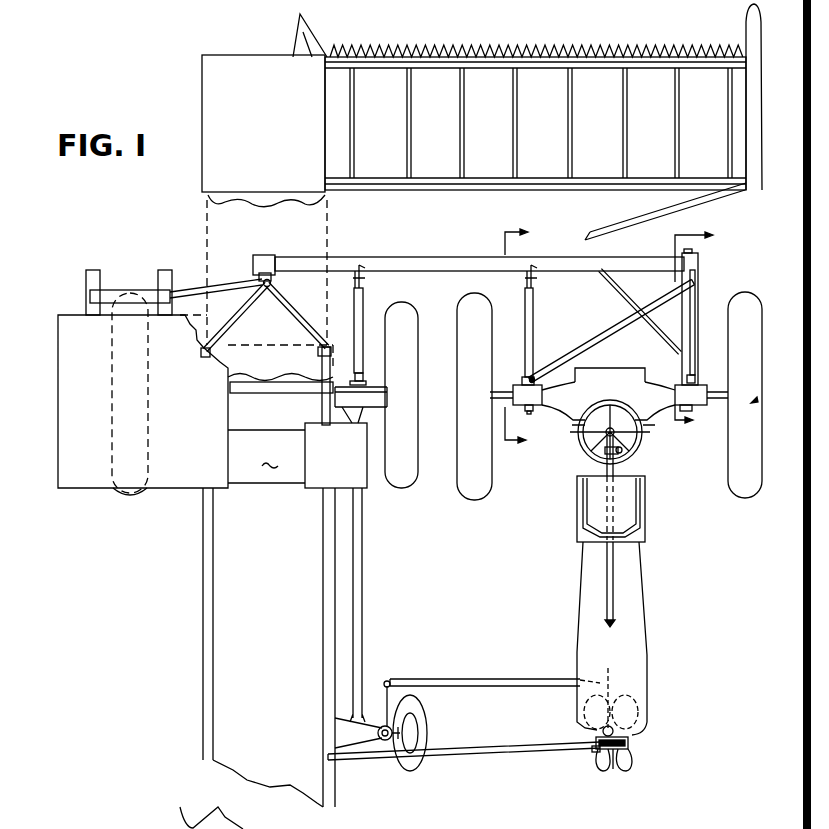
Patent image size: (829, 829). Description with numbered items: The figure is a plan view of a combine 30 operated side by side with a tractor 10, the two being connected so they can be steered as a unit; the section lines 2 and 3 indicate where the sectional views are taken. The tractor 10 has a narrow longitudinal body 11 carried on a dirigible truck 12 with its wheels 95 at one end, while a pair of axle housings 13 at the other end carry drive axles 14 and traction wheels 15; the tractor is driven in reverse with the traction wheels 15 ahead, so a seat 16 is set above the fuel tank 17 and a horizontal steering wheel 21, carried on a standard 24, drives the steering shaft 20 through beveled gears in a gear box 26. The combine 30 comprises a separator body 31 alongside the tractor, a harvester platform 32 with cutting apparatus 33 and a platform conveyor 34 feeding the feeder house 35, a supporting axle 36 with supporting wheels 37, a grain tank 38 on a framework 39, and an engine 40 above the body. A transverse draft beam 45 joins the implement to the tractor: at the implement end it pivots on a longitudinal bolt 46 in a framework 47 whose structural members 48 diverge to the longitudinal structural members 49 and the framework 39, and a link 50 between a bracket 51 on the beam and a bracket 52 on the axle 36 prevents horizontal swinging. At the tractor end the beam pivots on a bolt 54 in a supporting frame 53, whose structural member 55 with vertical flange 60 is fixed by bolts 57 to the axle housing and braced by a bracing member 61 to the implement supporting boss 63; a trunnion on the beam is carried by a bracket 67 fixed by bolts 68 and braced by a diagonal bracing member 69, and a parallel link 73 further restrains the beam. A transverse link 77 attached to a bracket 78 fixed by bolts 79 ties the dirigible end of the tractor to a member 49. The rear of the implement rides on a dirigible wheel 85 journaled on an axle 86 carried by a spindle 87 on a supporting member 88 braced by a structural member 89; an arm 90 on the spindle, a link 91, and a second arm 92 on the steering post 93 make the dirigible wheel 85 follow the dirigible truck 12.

The section line 2- 2 is at (716, 326).
The section line 3- 3 is at (519, 337).
The tractor 10 is at (578, 588).
The body 11 is at (640, 638).
The dirigible truck 12 is at (650, 744).
The axle housings 13 is at (535, 405).
The drive axles 14 is at (500, 390).
The traction wheels 15 is at (470, 308).
The seat 16 is at (628, 505).
The fuel tank 17 is at (628, 580).
The steering shaft 20 is at (607, 554).
The wheel 21 is at (592, 458).
The standard 24 is at (592, 418).
The gear box 26 is at (628, 418).
The combine 30 is at (203, 577).
The separator body 31 is at (276, 556).
The harvester platform 32 is at (546, 129).
The cutting apparatus 33 is at (522, 57).
The platform conveyor 34 is at (650, 80).
The feeder house 35 is at (271, 116).
The supporting axle 36 is at (338, 412).
The supporting wheels 37 is at (130, 498).
The grain tank 38 is at (68, 403).
The framework 39 is at (88, 282).
The engine 40 is at (274, 459).
The draft beam 45 is at (410, 257).
The bolt 46 is at (265, 298).
The framework 47 is at (303, 299).
The structural members 48 is at (240, 286).
The longitudinal structural members 49 is at (205, 356).
The link 50 is at (363, 325).
The bracket 51 is at (366, 278).
The bracket 52 is at (365, 380).
The supporting frame 53 is at (735, 282).
The pivot bolt 54 is at (693, 251).
The structural member 55 is at (690, 328).
The bolts 57 is at (687, 377).
The vertical flange 60 is at (695, 352).
The bracing member 61 is at (625, 330).
The implement supporting boss 63 is at (535, 378).
The bracket 67 is at (680, 422).
The bolts 68 is at (690, 412).
The diagonal bracing member 69 is at (628, 296).
The link 73 is at (525, 312).
The link 77 is at (478, 750).
The bracket 78 is at (623, 771).
The bolts 79 is at (596, 752).
The dirigible wheel 85 is at (421, 720).
The axle 86 is at (392, 742).
The spindle 87 is at (383, 742).
The supporting member 88 is at (350, 733).
The structural member 89 is at (357, 584).
The arm 90 is at (385, 700).
The link 91 is at (466, 679).
The second arm 92 is at (608, 678).
The steering post 93 is at (628, 720).
The wheels 95 is at (600, 770).